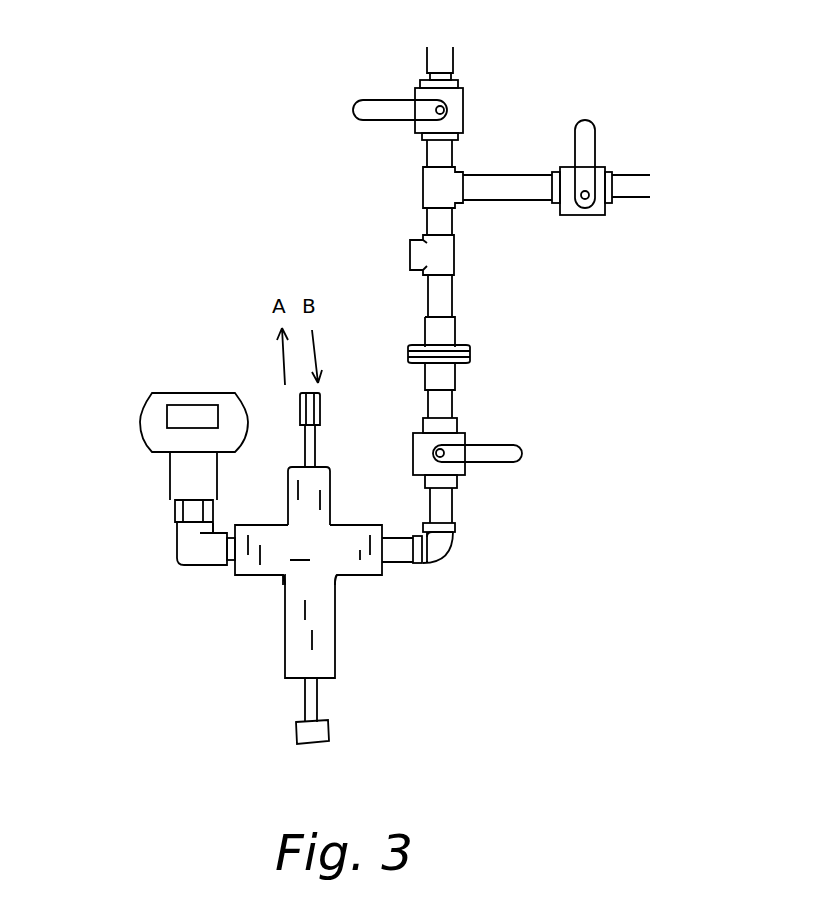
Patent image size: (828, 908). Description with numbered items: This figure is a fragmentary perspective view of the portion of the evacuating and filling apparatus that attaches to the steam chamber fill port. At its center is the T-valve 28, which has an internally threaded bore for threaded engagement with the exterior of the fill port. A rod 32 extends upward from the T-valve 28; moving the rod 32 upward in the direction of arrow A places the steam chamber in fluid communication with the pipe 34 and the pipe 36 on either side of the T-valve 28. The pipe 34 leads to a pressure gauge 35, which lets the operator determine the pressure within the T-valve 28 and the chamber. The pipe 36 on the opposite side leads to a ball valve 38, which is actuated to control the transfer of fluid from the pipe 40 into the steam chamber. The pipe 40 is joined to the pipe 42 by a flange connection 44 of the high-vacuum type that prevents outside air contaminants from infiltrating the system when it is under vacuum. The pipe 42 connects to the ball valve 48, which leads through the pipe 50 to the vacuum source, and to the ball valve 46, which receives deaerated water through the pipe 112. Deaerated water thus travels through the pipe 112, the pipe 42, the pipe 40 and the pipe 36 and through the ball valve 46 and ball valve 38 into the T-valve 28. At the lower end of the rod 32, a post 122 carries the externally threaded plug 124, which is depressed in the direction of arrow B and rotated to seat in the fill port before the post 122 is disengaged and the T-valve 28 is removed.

The T-valve 28 is at (313, 563).
The rod 32 is at (312, 443).
The pipe 34 is at (228, 557).
The pressure gauge 35 is at (137, 462).
The pipe 36 is at (403, 553).
The ball valve 38 is at (485, 475).
The pipe 40 is at (442, 402).
The pipe 42 is at (447, 285).
The flange connection 44 is at (468, 348).
The ball valve 46 is at (585, 217).
The ball valve 48 is at (477, 96).
The pipe 50 is at (440, 60).
The pipe 112 is at (637, 178).
The post 122 is at (310, 727).
The plug 124 is at (325, 733).